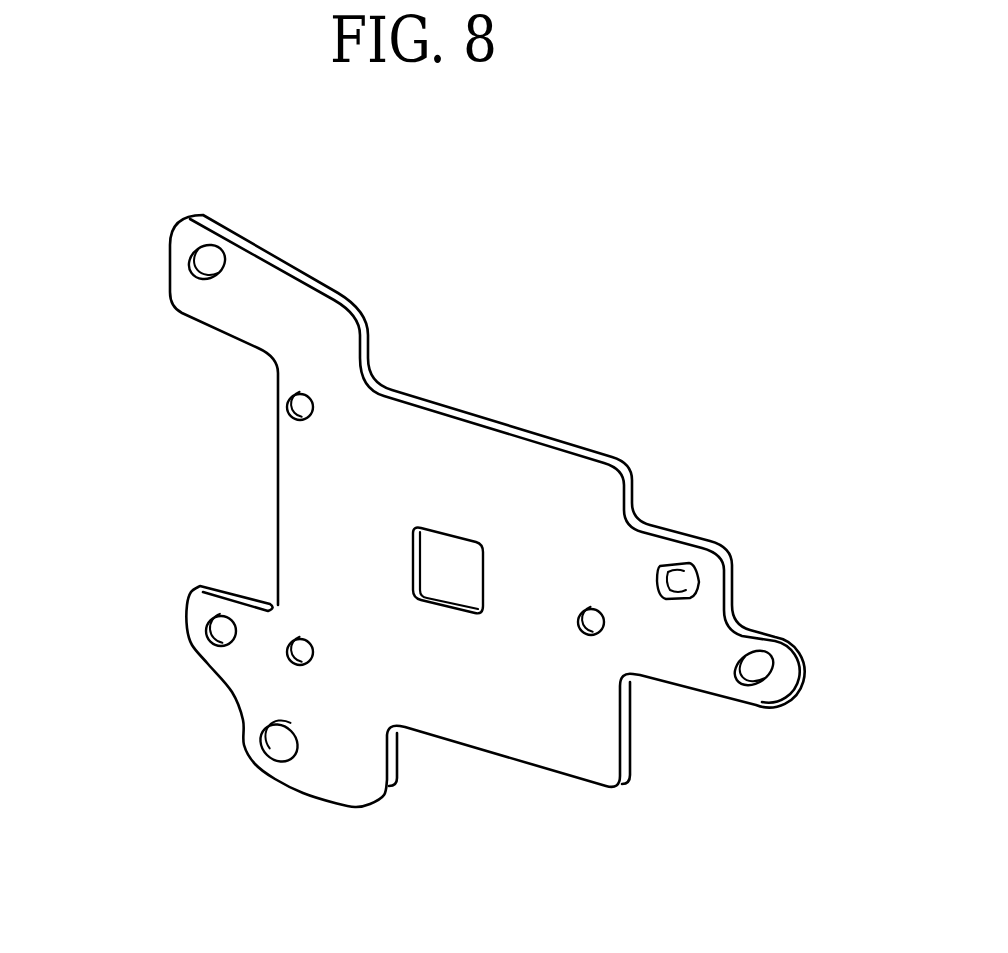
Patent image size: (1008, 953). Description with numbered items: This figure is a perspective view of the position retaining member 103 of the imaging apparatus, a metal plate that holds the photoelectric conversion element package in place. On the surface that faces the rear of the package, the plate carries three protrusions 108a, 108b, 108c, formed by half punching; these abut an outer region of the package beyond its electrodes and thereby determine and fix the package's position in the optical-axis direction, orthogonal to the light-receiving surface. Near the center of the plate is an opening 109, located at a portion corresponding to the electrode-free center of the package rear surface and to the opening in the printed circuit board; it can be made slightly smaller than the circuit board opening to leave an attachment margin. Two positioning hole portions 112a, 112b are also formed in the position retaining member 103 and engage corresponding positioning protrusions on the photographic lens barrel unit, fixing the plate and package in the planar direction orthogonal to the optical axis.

The position retaining member 103 is at (533, 497).
The opening 109 is at (447, 552).
The protrusion 108a is at (597, 630).
The protrusion 108b is at (292, 406).
The protrusion 108c is at (292, 660).
The positioning hole portion 112a is at (212, 631).
The positioning hole portion 112b is at (688, 576).